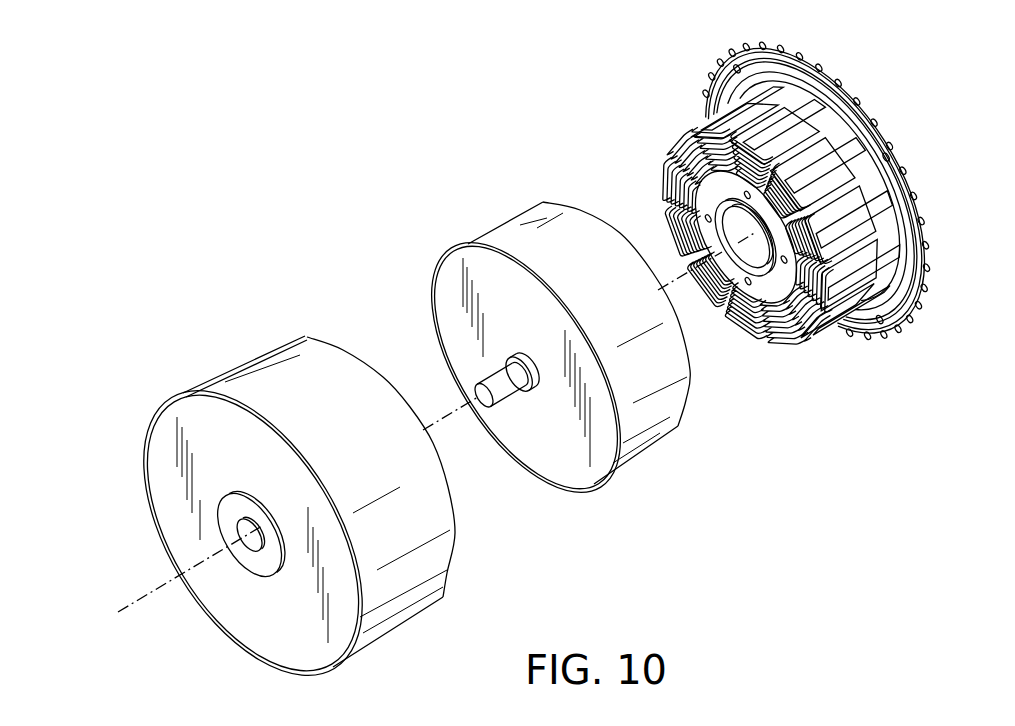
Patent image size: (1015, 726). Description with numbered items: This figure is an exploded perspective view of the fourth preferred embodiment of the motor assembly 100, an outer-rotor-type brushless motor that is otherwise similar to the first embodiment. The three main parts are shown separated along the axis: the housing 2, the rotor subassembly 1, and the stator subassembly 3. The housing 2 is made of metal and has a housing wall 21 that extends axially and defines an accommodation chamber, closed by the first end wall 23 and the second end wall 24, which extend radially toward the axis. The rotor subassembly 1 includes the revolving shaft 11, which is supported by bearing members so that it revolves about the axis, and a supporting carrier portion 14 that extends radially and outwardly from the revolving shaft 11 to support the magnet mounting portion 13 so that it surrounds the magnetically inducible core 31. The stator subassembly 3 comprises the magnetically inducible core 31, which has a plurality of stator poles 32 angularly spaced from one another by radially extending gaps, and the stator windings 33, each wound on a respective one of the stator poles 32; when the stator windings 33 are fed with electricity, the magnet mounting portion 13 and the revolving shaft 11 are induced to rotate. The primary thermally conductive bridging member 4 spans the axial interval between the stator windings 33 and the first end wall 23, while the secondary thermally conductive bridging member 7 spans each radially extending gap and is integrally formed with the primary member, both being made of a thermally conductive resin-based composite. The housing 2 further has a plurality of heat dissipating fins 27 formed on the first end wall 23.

The motor assembly 100 is at (270, 185).
The rotor subassembly 1 is at (461, 198).
The housing 2 is at (344, 343).
The stator subassembly 3 is at (815, 350).
The primary thermally conductive bridging member 4 is at (867, 155).
The secondary thermally conductive bridging member 7 is at (792, 126).
The revolving shaft 11 is at (505, 390).
The magnet mounting portion 13 is at (675, 428).
The supporting carrier portion 14 is at (582, 466).
The housing wall 21 is at (248, 372).
The first end wall 23 is at (897, 150).
The second end wall 24 is at (163, 455).
The heat dissipating fins 27 is at (935, 198).
The magnetically inducible core 31 is at (758, 294).
The stator poles 32 is at (848, 255).
The stator windings 33 is at (718, 130).